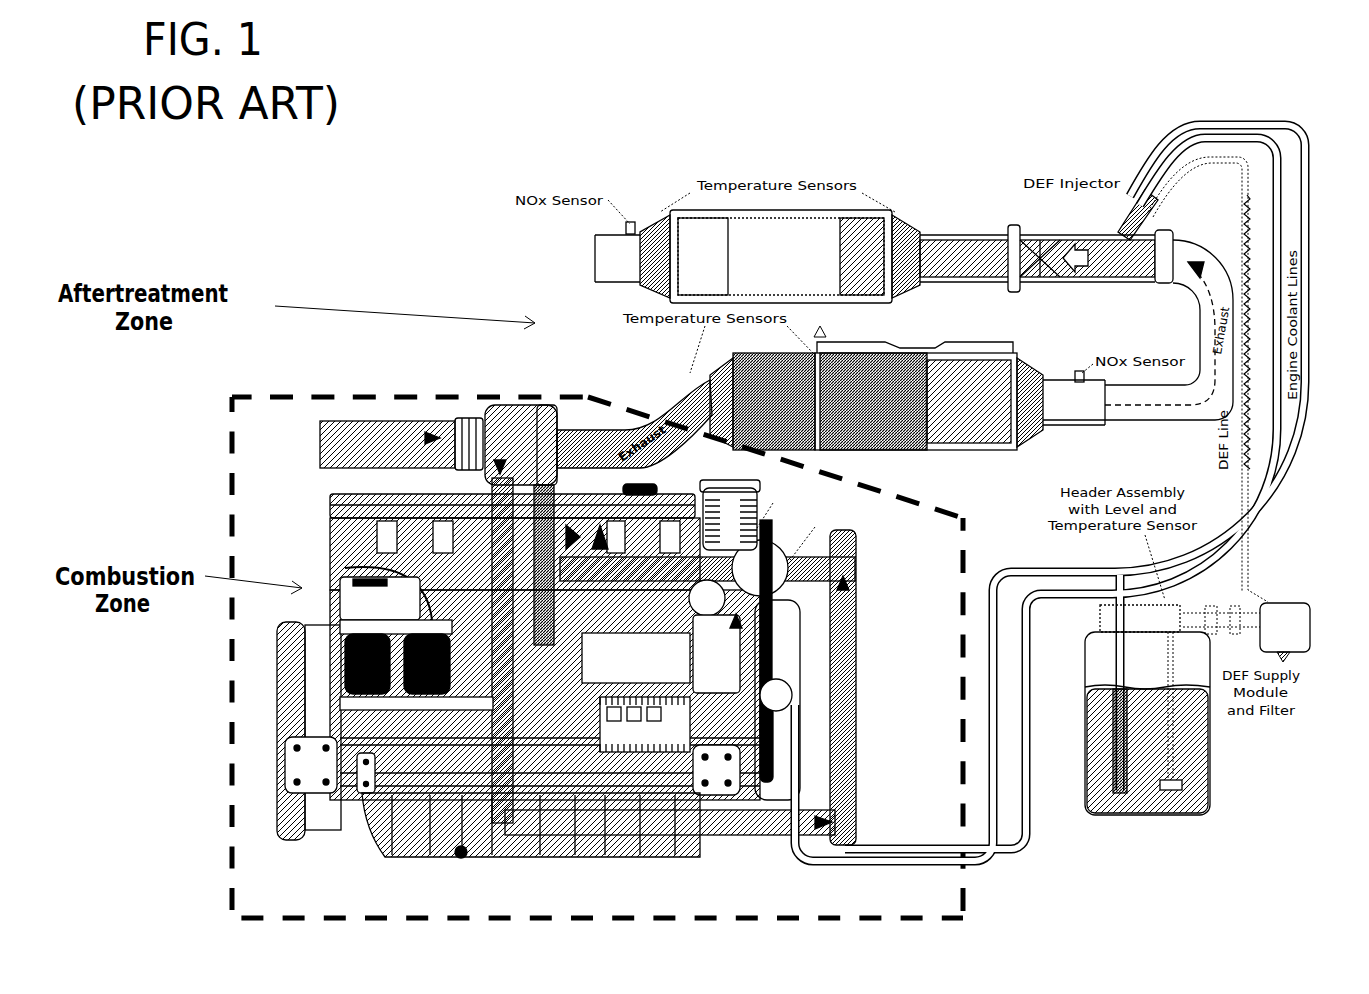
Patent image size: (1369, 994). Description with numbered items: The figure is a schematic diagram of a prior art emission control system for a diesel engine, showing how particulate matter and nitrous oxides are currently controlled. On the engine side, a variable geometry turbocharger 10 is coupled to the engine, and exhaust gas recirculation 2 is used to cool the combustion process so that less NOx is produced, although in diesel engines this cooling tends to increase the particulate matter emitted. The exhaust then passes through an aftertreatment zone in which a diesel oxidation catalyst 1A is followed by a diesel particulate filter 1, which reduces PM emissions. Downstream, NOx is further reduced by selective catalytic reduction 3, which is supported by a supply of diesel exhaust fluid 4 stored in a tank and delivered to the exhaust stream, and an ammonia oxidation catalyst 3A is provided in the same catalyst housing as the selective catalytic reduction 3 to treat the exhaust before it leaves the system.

The variable geometry turbocharger 10 is at (497, 405).
The exhaust gas recirculation 2 is at (553, 640).
The ammonia oxidation catalyst 3A is at (693, 225).
The selective catalytic reduction 3 is at (837, 225).
The diesel oxidation catalyst 1A is at (787, 410).
The diesel particulate filter 1 is at (920, 407).
The diesel exhaust fluid 4 is at (1203, 770).